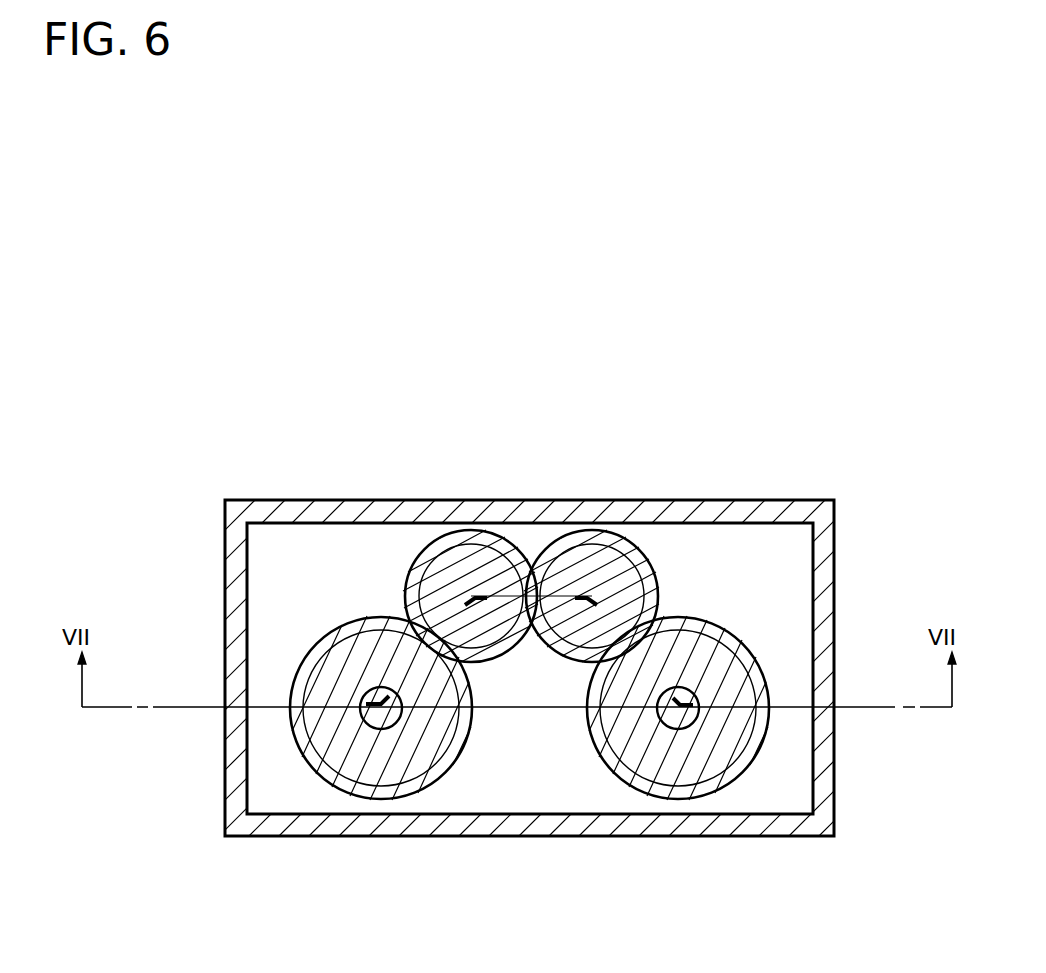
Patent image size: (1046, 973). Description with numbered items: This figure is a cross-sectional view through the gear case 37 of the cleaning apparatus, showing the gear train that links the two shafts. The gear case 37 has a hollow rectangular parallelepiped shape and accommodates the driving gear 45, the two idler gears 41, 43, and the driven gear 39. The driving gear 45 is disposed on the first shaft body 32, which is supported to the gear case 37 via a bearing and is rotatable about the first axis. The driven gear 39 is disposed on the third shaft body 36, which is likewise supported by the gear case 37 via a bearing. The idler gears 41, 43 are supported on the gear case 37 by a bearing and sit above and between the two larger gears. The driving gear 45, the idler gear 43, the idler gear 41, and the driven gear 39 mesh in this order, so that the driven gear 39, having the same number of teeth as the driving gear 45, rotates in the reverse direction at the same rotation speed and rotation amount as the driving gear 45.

The gear case 37 is at (818, 502).
The driven gear 39 is at (353, 615).
The idler gear 41 is at (446, 530).
The idler gear 43 is at (610, 527).
The driving gear 45 is at (703, 620).
The third shaft body 36 is at (363, 745).
The first shaft body 32 is at (690, 725).